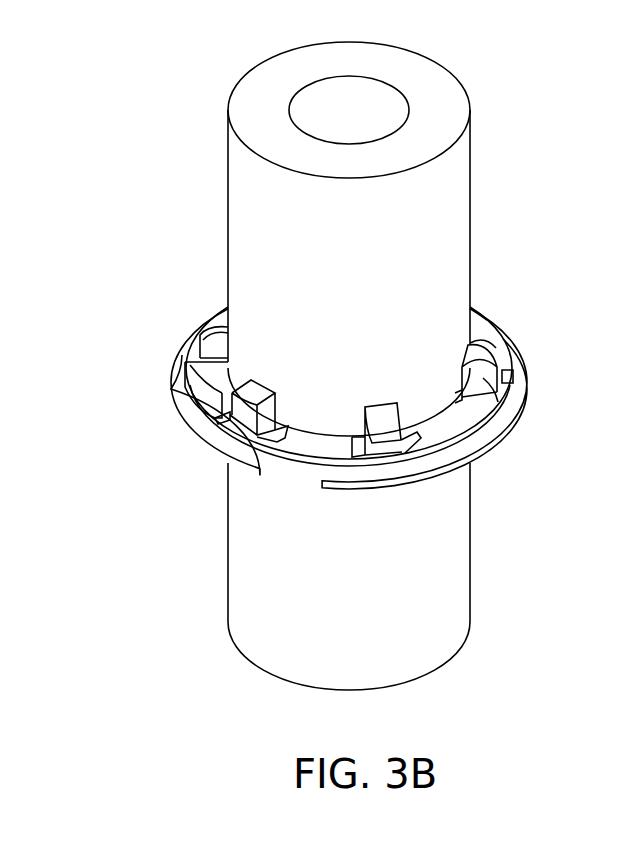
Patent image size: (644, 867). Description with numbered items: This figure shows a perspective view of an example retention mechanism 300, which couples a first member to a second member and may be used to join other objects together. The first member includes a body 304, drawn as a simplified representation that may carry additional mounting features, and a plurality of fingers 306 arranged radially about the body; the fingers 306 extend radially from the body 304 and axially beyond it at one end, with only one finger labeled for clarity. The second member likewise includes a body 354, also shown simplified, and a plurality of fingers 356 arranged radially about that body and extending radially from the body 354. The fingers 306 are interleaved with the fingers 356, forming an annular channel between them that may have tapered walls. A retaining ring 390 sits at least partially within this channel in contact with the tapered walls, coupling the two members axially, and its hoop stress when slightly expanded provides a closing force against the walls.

The retention mechanism 300 is at (530, 88).
The body 304 is at (431, 214).
The body 354 is at (439, 563).
The fingers 356 is at (488, 339).
The retaining ring 390 is at (516, 392).
The fingers 306 is at (510, 410).